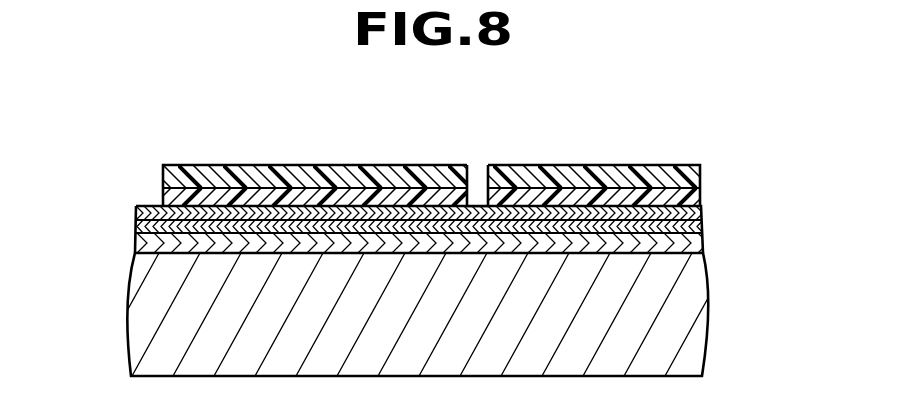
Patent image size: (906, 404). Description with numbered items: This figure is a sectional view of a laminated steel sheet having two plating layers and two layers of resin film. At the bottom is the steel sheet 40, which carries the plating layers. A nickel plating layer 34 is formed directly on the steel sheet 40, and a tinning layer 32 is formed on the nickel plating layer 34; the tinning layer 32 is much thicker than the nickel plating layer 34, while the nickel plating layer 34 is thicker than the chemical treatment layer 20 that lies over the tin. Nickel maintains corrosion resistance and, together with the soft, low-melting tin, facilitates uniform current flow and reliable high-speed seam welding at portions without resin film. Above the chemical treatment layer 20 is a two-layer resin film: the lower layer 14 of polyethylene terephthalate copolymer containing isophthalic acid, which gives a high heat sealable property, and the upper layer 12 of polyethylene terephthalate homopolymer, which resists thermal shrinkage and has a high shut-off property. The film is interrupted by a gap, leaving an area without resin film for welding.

The upper layer 12 is at (163, 174).
The lower layer 14 is at (163, 196).
The chemical treatment layer 20 is at (136, 210).
The tinning layer 32 is at (696, 228).
The nickel plating layer 34 is at (694, 240).
The steel sheet 40 is at (688, 308).